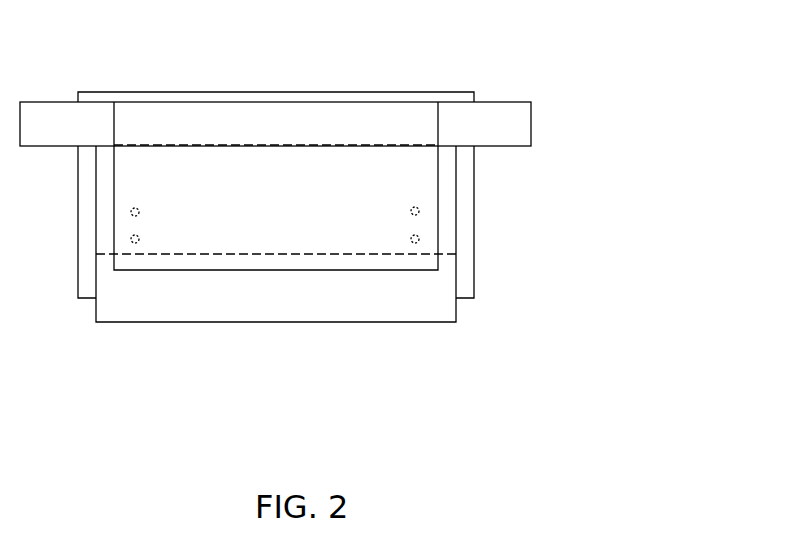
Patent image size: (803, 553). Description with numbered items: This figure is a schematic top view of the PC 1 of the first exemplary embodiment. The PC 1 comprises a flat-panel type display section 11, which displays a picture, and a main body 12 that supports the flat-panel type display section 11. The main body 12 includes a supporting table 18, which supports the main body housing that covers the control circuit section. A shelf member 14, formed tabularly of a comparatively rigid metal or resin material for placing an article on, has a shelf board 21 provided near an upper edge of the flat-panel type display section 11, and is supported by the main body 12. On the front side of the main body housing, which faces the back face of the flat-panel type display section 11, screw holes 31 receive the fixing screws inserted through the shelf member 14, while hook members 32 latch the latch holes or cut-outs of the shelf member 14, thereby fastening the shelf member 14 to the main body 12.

The PC 1 is at (497, 408).
The flat-panel type display section 11 is at (496, 108).
The main body 12 is at (358, 312).
The shelf member 14 is at (245, 262).
The supporting table 18 is at (467, 217).
The shelf board 21 is at (385, 157).
The screw holes 31 is at (128, 242).
The hook members 32 is at (128, 209).